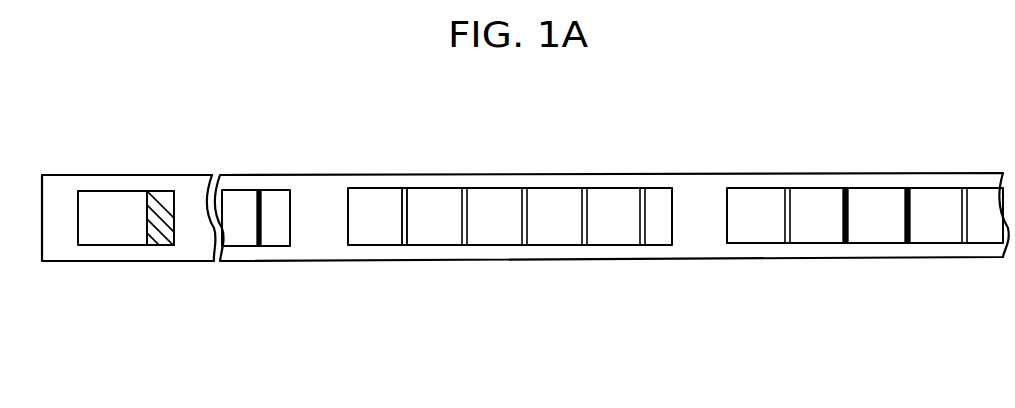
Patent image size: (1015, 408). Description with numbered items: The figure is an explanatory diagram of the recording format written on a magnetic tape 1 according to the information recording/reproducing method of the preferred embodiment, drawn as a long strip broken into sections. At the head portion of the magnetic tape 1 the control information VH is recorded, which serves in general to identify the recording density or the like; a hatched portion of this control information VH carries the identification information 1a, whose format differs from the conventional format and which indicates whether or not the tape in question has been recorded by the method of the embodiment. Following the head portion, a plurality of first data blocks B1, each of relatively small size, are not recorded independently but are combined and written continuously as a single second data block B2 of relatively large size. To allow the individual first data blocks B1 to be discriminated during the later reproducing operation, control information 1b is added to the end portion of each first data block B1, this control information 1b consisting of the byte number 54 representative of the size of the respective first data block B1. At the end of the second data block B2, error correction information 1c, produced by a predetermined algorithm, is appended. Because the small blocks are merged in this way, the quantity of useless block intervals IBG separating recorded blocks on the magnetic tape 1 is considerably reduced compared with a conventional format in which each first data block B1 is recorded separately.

The magnetic tape 1 is at (956, 167).
The identification information 1a is at (163, 195).
The control information 1b is at (401, 273).
The byte number 54 is at (405, 233).
The error correction information 1c is at (663, 233).
The control information VH is at (107, 195).
The block interval IBG is at (308, 192).
The first data block B1 is at (373, 233).
The second data block B2 is at (672, 167).